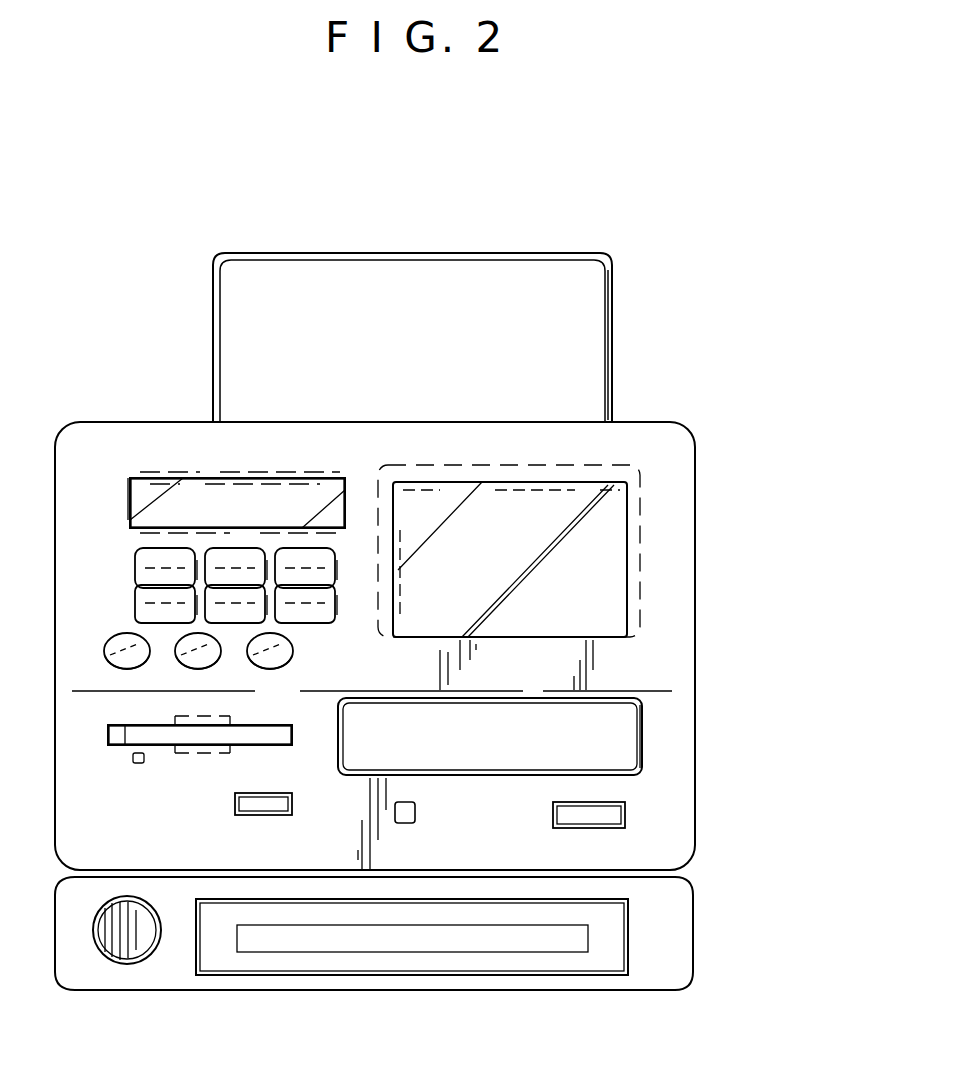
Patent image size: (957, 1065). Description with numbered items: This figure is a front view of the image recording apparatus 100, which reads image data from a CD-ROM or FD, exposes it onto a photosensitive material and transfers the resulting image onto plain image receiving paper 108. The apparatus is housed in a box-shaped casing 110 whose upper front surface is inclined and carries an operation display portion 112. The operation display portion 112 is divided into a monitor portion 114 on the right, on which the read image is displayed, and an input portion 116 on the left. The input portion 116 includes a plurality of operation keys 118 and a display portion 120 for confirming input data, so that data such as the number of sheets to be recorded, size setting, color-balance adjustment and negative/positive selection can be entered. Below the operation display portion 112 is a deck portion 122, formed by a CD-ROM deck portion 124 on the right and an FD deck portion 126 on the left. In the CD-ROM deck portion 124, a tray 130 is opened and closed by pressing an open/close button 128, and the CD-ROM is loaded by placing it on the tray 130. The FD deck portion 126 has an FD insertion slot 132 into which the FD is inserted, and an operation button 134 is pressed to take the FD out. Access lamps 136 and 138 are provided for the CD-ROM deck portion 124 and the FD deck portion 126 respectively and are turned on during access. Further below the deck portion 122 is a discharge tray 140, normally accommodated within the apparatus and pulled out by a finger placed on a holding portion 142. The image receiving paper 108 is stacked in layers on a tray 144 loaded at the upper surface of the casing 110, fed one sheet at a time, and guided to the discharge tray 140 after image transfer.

The image recording apparatus 100 is at (722, 498).
The image receiving paper 108 is at (578, 285).
The casing 110 is at (682, 641).
The operation display portion 112 is at (205, 357).
The monitor portion 114 is at (417, 507).
The input portion 116 is at (118, 481).
The operation keys 118 is at (122, 650).
The display portion 120 is at (130, 497).
The deck portion 122 is at (785, 722).
The CD-ROM deck portion 124 is at (644, 769).
The FD deck portion 126 is at (296, 755).
The open/close button 128 is at (625, 823).
The tray 130 is at (628, 720).
The FD insertion slot 132 is at (120, 746).
The operation button 134 is at (280, 808).
The access lamp 136 is at (415, 821).
The access lamp 138 is at (138, 764).
The discharge tray 140 is at (628, 932).
The holding portion 142 is at (505, 930).
The tray 144 is at (612, 320).